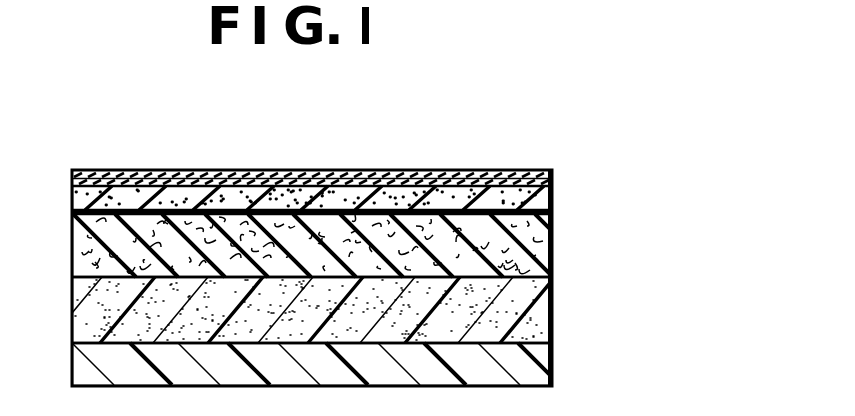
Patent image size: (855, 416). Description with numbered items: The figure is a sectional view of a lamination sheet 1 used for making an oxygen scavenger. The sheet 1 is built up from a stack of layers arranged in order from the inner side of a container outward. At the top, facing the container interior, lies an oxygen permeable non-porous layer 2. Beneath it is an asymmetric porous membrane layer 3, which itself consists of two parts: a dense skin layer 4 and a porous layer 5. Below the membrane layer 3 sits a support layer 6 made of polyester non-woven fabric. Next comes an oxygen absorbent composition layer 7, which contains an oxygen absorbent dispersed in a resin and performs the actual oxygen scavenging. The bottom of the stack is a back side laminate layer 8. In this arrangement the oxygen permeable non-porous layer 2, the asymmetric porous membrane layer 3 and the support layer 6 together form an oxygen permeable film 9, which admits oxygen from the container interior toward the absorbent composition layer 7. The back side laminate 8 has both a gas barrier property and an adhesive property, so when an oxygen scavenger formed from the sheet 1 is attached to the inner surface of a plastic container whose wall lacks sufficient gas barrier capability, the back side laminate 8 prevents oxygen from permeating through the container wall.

The sheet 1 is at (83, 162).
The oxygen permeable non-porous layer 2 is at (545, 170).
The asymmetric porous membrane layer 3 is at (621, 163).
The dense skin layer 4 is at (553, 186).
The porous layer 5 is at (553, 203).
The support layer 6 is at (553, 247).
The oxygen absorbent composition layer 7 is at (550, 310).
The back side laminate layer 8 is at (549, 358).
The oxygen permeable film 9 is at (688, 275).